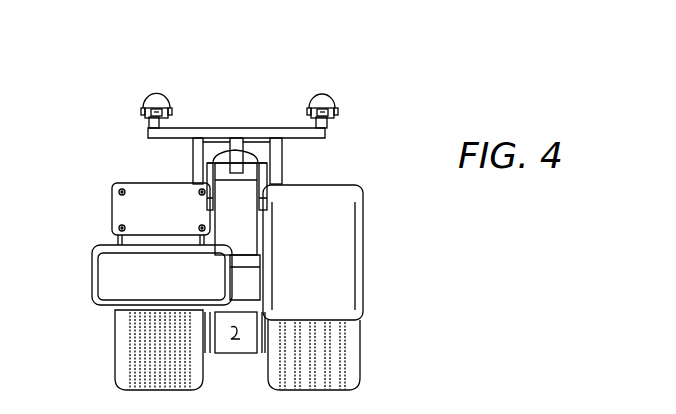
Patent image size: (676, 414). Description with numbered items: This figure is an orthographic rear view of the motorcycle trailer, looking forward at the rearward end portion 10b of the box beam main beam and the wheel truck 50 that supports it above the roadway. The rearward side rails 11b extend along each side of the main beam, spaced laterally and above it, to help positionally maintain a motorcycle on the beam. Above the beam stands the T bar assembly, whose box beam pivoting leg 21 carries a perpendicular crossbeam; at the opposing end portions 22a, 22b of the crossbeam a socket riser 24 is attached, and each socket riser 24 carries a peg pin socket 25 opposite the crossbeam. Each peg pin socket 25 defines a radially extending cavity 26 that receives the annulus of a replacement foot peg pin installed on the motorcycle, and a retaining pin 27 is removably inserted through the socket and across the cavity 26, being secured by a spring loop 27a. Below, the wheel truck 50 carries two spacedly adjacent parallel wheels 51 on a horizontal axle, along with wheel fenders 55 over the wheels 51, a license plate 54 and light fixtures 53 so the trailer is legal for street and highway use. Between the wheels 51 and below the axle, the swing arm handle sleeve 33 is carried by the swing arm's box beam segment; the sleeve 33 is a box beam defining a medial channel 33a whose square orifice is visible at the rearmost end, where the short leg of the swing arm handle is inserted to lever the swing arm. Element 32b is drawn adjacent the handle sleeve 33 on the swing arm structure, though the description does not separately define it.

The rearward end portion 10b is at (227, 217).
The rearward side rails 11b is at (195, 162).
The pivoting leg 21 is at (234, 148).
The end portion of crossbeam 22a is at (148, 138).
The end portion of crossbeam 22b is at (298, 135).
The socket riser 24 is at (147, 130).
The peg pin socket 25 is at (143, 115).
The radially extending cavity 26 is at (147, 97).
The retaining pin 27 is at (337, 103).
The spring loop 27a is at (168, 100).
The lower block 32b is at (243, 286).
The swing arm handle sleeve 33 is at (220, 355).
The medial channel 33a is at (242, 330).
The wheel truck 50 is at (372, 242).
The wheels 51 is at (127, 333).
The light fixtures 53 is at (112, 217).
The license plate 54 is at (100, 298).
The wheel fenders 55 is at (350, 263).